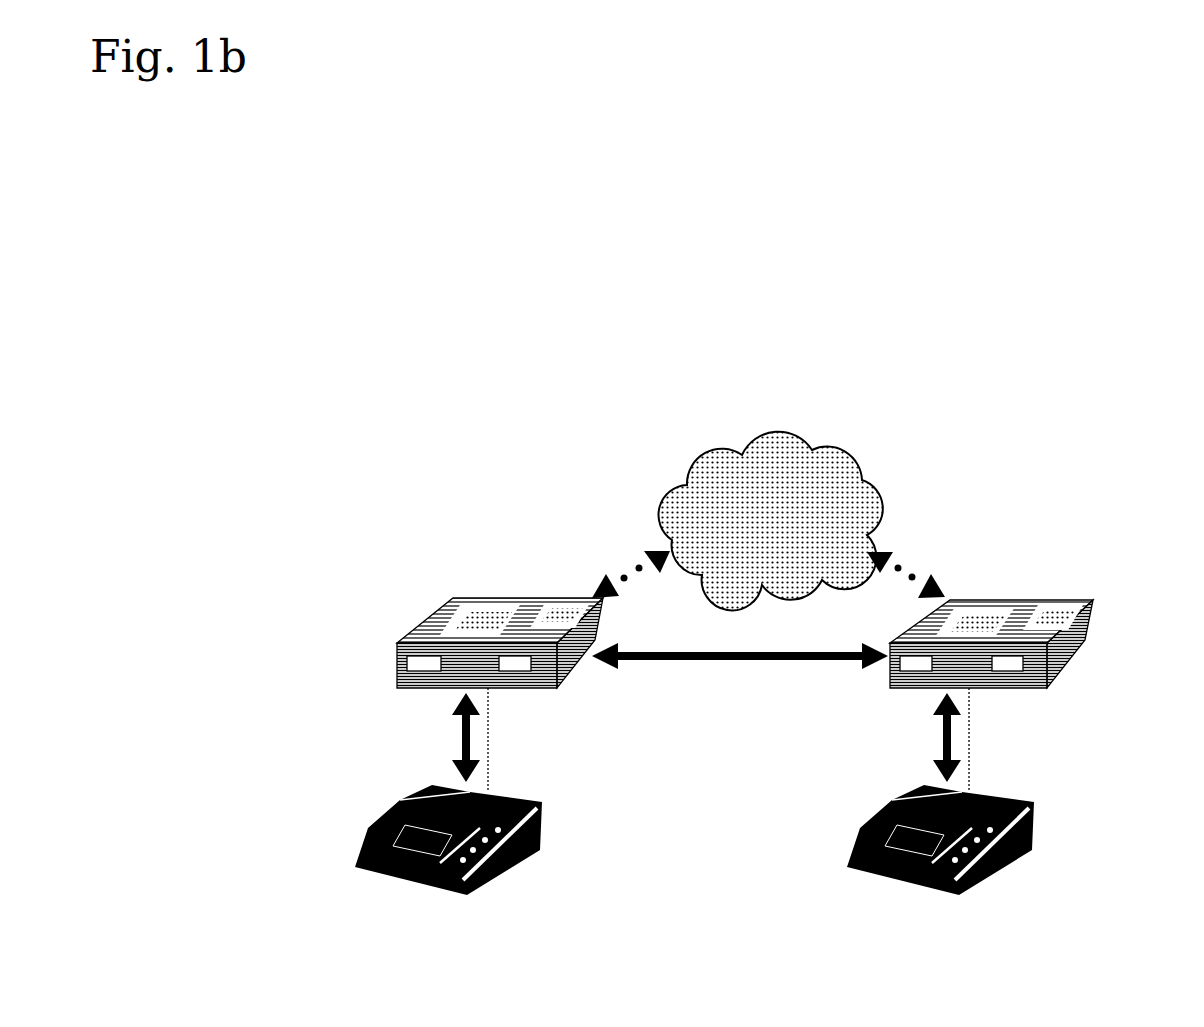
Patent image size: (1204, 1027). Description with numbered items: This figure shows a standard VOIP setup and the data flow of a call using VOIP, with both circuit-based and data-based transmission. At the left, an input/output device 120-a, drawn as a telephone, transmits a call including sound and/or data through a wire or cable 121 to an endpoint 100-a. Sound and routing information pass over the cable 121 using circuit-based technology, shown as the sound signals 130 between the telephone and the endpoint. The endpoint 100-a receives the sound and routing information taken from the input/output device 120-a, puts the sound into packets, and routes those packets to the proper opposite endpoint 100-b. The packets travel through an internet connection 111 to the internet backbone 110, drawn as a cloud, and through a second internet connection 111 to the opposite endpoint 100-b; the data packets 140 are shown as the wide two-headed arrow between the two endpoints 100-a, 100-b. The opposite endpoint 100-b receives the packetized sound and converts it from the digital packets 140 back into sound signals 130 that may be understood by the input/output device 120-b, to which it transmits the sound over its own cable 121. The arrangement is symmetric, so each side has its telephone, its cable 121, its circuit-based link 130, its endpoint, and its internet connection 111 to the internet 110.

The internet backbone 110 is at (762, 440).
The internet connection 111 is at (624, 564).
The endpoint 100-a is at (453, 586).
The endpoint 100-b is at (1072, 586).
The input/output device 120-a is at (548, 858).
The input/output device 120-b is at (1041, 853).
The wire or cable 121 is at (500, 739).
The circuit-based sound signals 130 is at (447, 739).
The data packets 140 is at (740, 680).